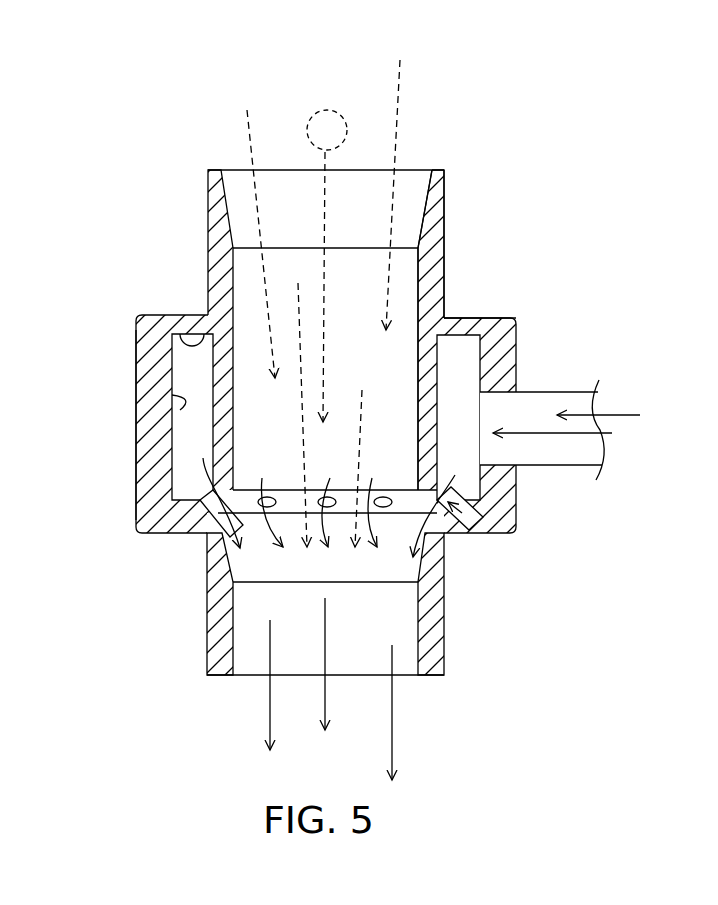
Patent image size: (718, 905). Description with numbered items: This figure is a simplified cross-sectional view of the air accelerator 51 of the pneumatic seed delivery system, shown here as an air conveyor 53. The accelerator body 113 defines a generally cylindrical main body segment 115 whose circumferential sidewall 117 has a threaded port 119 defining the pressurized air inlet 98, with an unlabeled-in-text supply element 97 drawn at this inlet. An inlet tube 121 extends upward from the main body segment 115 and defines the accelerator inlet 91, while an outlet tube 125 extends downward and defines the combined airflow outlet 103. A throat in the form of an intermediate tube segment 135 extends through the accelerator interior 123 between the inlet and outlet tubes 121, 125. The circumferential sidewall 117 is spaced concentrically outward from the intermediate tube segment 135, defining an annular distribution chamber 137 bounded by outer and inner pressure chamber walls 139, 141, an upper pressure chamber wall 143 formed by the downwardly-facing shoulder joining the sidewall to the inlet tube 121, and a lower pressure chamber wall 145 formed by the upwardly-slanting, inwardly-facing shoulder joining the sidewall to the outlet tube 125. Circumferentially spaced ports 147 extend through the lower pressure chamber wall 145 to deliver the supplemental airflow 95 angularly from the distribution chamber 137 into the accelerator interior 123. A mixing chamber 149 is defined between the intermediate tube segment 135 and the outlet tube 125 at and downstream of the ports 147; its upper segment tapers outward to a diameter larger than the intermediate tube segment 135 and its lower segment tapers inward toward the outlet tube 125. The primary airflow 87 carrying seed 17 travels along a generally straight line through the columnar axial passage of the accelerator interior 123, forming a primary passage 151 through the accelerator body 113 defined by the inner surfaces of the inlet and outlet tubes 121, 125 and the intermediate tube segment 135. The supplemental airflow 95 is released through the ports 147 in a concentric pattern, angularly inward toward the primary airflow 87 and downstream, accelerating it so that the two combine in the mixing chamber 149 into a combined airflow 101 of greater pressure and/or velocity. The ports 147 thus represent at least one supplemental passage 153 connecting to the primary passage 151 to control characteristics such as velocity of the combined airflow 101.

The seed 17 is at (307, 128).
The air accelerator 51 is at (505, 128).
The air conveyor 53 is at (548, 160).
The primary airflow 87 is at (399, 64).
The accelerator inlet 91 is at (218, 145).
The supplemental airflow 95 is at (618, 412).
The air supply pipe 97 is at (563, 468).
The pressurized air inlet 98 is at (530, 380).
The combined airflow 101 is at (392, 718).
The combined airflow outlet 103 is at (228, 703).
The accelerator body 113 is at (458, 205).
The main body segment 115 is at (125, 323).
The circumferential sidewall 117 is at (133, 386).
The threaded port 119 is at (527, 386).
The inlet tube 121 is at (192, 213).
The accelerator interior 123 is at (252, 290).
The outlet tube 125 is at (140, 650).
The intermediate tube segment 135 is at (416, 386).
The distribution chamber 137 is at (458, 358).
The outer pressure chamber wall 139 is at (172, 413).
The inner pressure chamber wall 141 is at (175, 445).
The upper pressure chamber wall 143 is at (180, 333).
The lower pressure chamber wall 145 is at (187, 487).
The ports 147 is at (267, 498).
The mixing chamber 149 is at (203, 548).
The primary passage 151 is at (410, 200).
The supplemental passage 153 is at (450, 525).